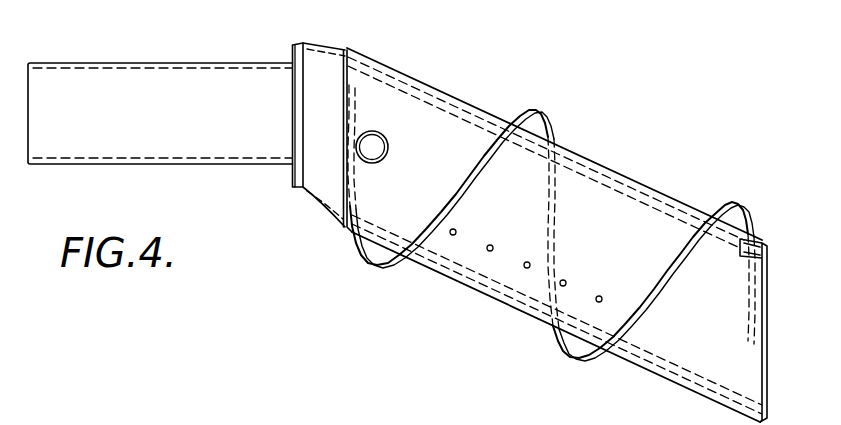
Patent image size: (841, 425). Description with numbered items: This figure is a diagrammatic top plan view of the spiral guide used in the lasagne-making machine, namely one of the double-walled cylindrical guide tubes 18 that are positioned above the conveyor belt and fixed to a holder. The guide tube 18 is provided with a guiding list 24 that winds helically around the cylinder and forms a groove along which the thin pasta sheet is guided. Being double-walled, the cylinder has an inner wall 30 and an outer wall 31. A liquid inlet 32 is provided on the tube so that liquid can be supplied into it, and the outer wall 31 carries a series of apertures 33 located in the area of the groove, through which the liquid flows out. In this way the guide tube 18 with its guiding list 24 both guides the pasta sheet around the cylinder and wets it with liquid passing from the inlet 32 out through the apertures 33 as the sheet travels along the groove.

The double-walled cylindrical guide tube 18 is at (630, 232).
The guiding list 24 is at (542, 122).
The inner wall 30 is at (320, 73).
The outer wall 31 is at (443, 275).
The liquid inlet 32 is at (380, 136).
The apertures 33 is at (490, 251).